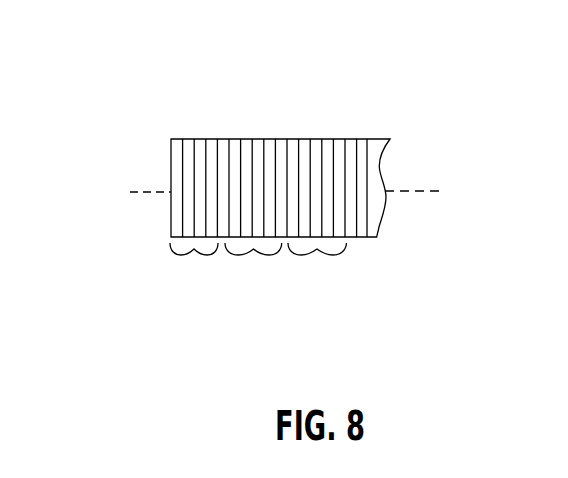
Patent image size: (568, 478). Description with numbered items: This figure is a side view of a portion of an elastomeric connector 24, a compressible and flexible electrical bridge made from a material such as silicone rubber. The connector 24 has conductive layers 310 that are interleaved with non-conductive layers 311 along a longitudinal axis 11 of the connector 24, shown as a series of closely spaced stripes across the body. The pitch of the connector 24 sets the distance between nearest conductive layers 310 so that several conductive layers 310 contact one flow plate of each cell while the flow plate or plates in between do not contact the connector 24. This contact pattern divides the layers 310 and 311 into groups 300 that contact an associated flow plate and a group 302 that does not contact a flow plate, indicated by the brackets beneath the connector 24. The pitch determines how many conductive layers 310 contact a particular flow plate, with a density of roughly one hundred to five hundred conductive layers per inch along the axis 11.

The longitudinal axis 11 is at (427, 191).
The elastomeric connector 24 is at (138, 199).
The groups 300 is at (195, 253).
The group 302 is at (253, 252).
The conductive layers 310 is at (193, 138).
The non-conductive layers 311 is at (183, 138).